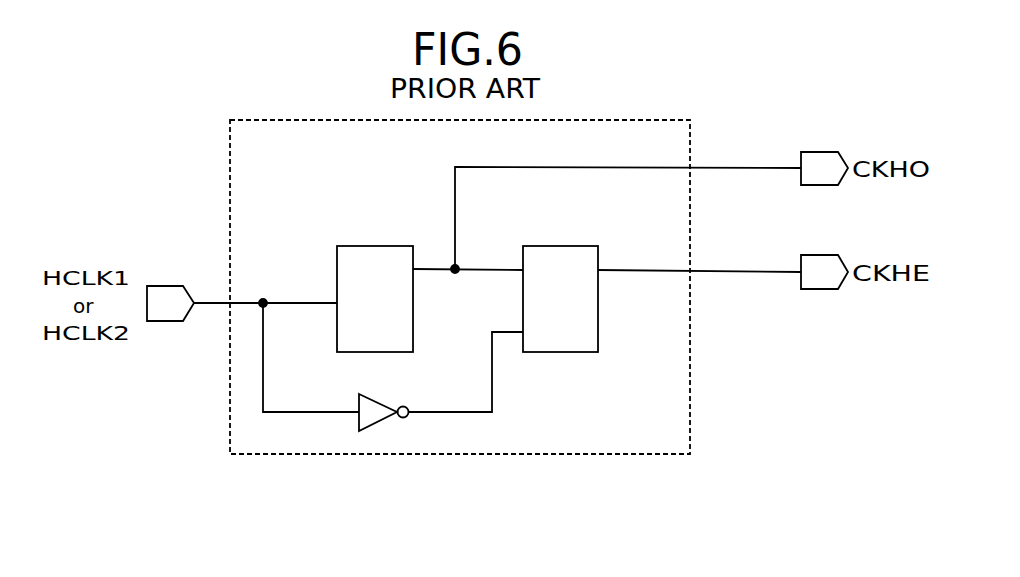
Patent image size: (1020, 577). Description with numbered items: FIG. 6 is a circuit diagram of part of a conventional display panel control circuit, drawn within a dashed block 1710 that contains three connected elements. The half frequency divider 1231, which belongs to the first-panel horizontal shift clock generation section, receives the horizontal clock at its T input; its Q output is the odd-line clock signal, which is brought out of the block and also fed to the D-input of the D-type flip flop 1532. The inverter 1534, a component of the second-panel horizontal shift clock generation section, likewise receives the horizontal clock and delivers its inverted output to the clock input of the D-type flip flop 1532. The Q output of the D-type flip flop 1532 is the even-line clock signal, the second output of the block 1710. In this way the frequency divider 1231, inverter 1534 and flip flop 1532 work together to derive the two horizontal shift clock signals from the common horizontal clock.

The ½ frequency divider 1231 is at (368, 246).
The D-type flip flop 1532 is at (558, 246).
The inverter 1534 is at (372, 398).
The clock generation circuit (prior art) 1710 is at (571, 454).